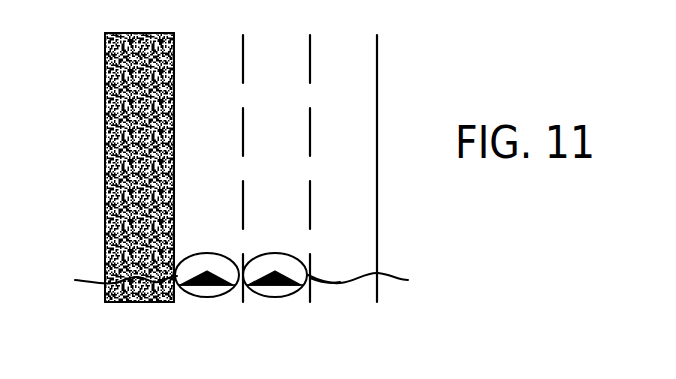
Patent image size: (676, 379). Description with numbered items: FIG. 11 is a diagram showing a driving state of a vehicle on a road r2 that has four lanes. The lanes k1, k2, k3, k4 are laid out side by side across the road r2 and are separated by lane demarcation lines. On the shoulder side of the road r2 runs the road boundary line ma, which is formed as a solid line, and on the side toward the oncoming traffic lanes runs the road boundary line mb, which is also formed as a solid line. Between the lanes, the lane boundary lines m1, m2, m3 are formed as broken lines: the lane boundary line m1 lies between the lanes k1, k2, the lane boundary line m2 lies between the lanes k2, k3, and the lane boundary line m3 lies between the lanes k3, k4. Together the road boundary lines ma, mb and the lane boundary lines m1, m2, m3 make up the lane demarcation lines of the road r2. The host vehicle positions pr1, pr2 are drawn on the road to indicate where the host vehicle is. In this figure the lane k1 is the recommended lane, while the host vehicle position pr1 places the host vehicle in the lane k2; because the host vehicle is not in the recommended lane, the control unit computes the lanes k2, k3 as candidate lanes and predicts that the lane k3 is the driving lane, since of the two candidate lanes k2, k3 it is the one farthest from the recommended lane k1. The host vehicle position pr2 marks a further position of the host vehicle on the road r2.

The road r2 is at (99, 178).
The lane k1 is at (140, 303).
The road boundary line ma is at (105, 303).
The lane boundary line m1 is at (170, 303).
The lane boundary line m2 is at (240, 303).
The lane boundary line m3 is at (308, 303).
The road boundary line mb is at (375, 303).
The lane k2 is at (205, 303).
The lane k3 is at (277, 303).
The lane k4 is at (333, 303).
The host vehicle position pr1 is at (107, 281).
The host vehicle position pr2 is at (373, 280).